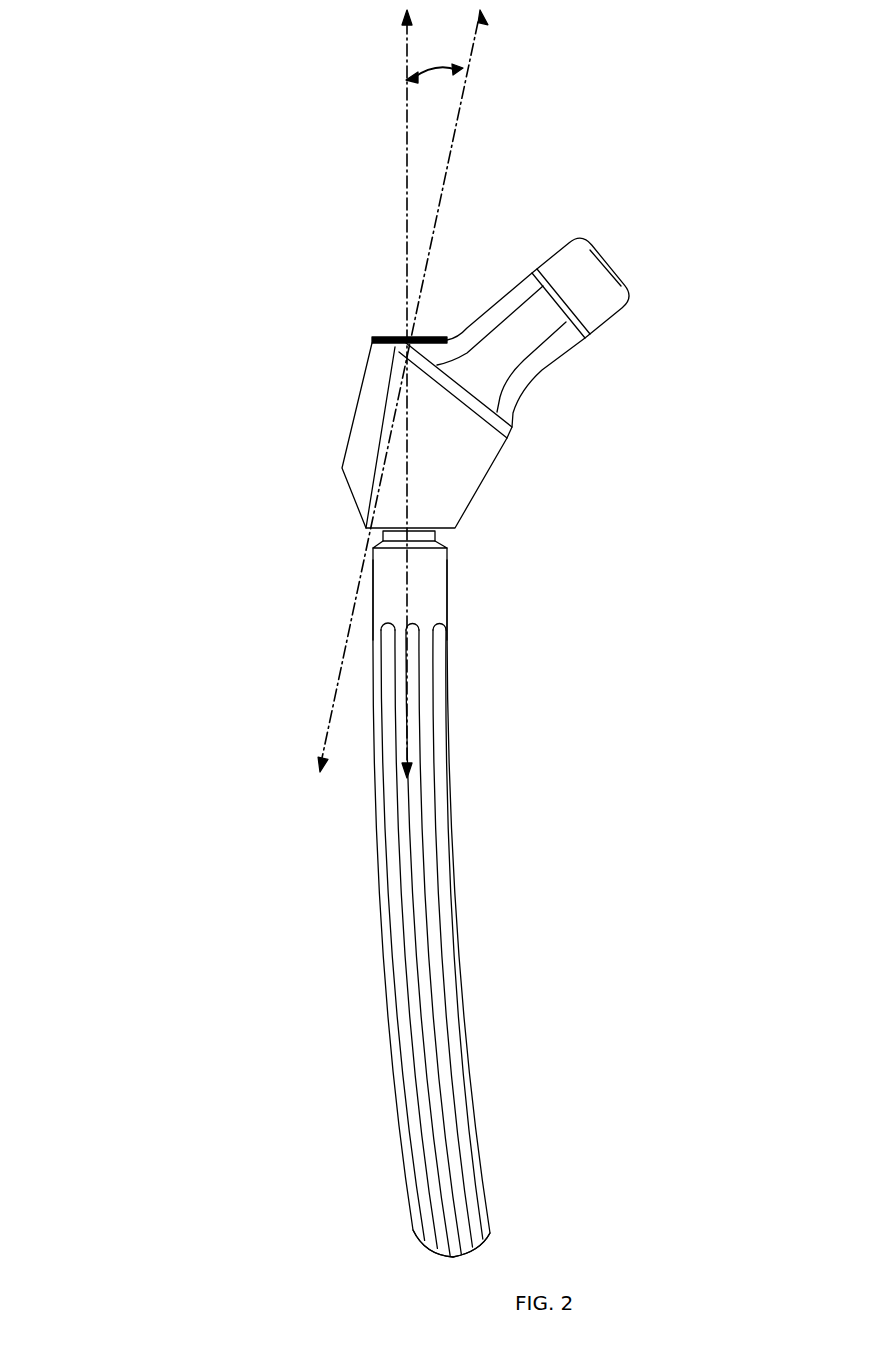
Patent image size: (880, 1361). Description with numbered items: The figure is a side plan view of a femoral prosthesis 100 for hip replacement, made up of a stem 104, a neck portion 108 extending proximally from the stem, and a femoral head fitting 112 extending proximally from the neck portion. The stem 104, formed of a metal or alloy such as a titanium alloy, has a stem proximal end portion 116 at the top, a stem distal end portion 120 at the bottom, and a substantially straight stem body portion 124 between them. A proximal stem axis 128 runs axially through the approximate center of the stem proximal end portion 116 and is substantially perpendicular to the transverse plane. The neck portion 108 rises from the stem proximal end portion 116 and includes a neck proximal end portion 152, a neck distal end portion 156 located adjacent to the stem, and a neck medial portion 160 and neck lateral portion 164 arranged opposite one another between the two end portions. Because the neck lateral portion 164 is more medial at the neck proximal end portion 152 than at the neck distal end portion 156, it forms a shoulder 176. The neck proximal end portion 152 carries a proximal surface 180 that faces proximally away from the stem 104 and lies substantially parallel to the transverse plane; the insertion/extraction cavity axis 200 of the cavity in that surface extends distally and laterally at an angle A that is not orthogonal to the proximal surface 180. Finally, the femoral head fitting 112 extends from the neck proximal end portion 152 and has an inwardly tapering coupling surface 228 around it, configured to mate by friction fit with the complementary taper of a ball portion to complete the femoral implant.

The femoral prosthesis 100 is at (101, 327).
The stem 104 is at (403, 885).
The neck portion 108 is at (466, 438).
The femoral head fitting 112 is at (592, 300).
The stem proximal end portion 116 is at (438, 580).
The stem distal end portion 120 is at (475, 1170).
The stem body portion 124 is at (447, 815).
The proximal stem axis 128 is at (407, 116).
The neck proximal end portion 152 is at (533, 323).
The neck distal end portion 156 is at (465, 484).
The neck medial portion 160 is at (533, 360).
The neck lateral portion 164 is at (487, 330).
The shoulder 176 is at (363, 412).
The proximal surface 180 is at (395, 339).
The insertion/extraction cavity axis 200 is at (468, 87).
The coupling surface 228 is at (626, 294).
The angle A is at (445, 67).